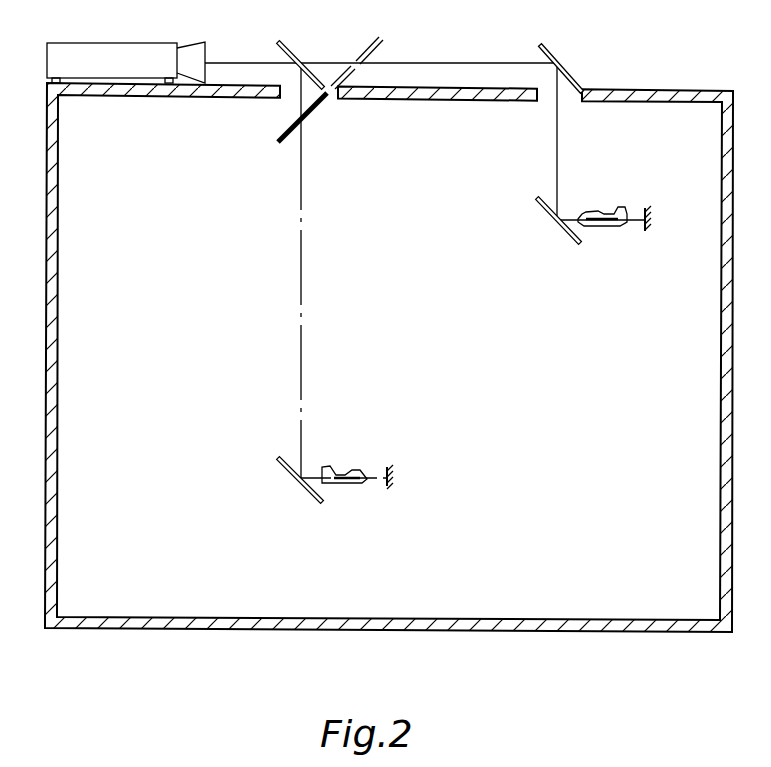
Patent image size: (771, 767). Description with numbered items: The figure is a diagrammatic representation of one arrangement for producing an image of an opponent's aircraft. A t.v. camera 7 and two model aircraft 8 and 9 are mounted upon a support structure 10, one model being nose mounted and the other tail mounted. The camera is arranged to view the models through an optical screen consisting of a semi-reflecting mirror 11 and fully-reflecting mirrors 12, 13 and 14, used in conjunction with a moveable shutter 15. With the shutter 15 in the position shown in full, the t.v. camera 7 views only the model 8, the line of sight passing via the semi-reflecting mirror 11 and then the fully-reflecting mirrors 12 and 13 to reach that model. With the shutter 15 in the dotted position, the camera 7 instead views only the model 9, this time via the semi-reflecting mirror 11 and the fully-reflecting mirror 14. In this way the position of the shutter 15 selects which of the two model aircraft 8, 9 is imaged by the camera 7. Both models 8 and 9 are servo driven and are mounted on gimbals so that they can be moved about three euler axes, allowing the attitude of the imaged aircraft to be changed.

The t.v. camera 7 is at (114, 52).
The model aircraft 8 is at (608, 214).
The model aircraft 9 is at (340, 477).
The support structure 10 is at (370, 633).
The semi-reflecting mirror 11 is at (298, 58).
The fully-reflecting mirror 12 is at (568, 72).
The fully-reflecting mirror 13 is at (549, 212).
The fully-reflecting mirror 14 is at (285, 467).
The moveable shutter 15 is at (282, 140).